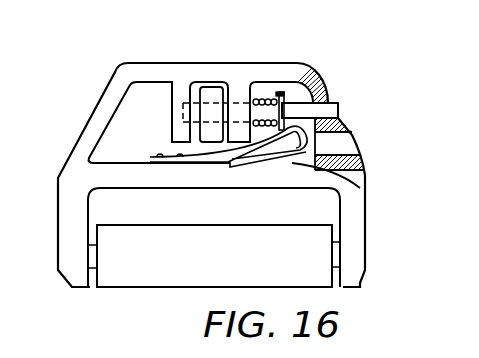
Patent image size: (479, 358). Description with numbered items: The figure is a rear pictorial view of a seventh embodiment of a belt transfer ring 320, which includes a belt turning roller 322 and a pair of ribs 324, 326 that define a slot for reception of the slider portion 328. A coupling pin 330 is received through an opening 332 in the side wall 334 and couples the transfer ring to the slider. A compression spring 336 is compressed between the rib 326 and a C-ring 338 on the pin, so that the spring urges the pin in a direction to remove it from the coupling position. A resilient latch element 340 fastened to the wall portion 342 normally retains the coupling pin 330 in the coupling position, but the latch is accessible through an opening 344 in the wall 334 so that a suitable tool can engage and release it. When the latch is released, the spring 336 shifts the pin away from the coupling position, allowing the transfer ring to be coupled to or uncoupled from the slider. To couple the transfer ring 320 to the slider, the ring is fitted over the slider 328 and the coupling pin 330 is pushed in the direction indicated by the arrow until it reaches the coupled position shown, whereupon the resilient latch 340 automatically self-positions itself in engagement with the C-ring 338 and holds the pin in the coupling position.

The belt transfer ring 320 is at (86, 95).
The belt turning roller 322 is at (107, 284).
The rib 324 is at (174, 99).
The rib 326 is at (242, 92).
The slider portion 328 is at (210, 90).
The coupling pin 330 is at (347, 110).
The opening 332 is at (336, 99).
The side wall 334 is at (315, 95).
The compression spring 336 is at (268, 101).
The C-ring 338 is at (283, 95).
The resilient latch element 340 is at (360, 188).
The wall portion 342 is at (182, 182).
The opening 344 is at (366, 143).